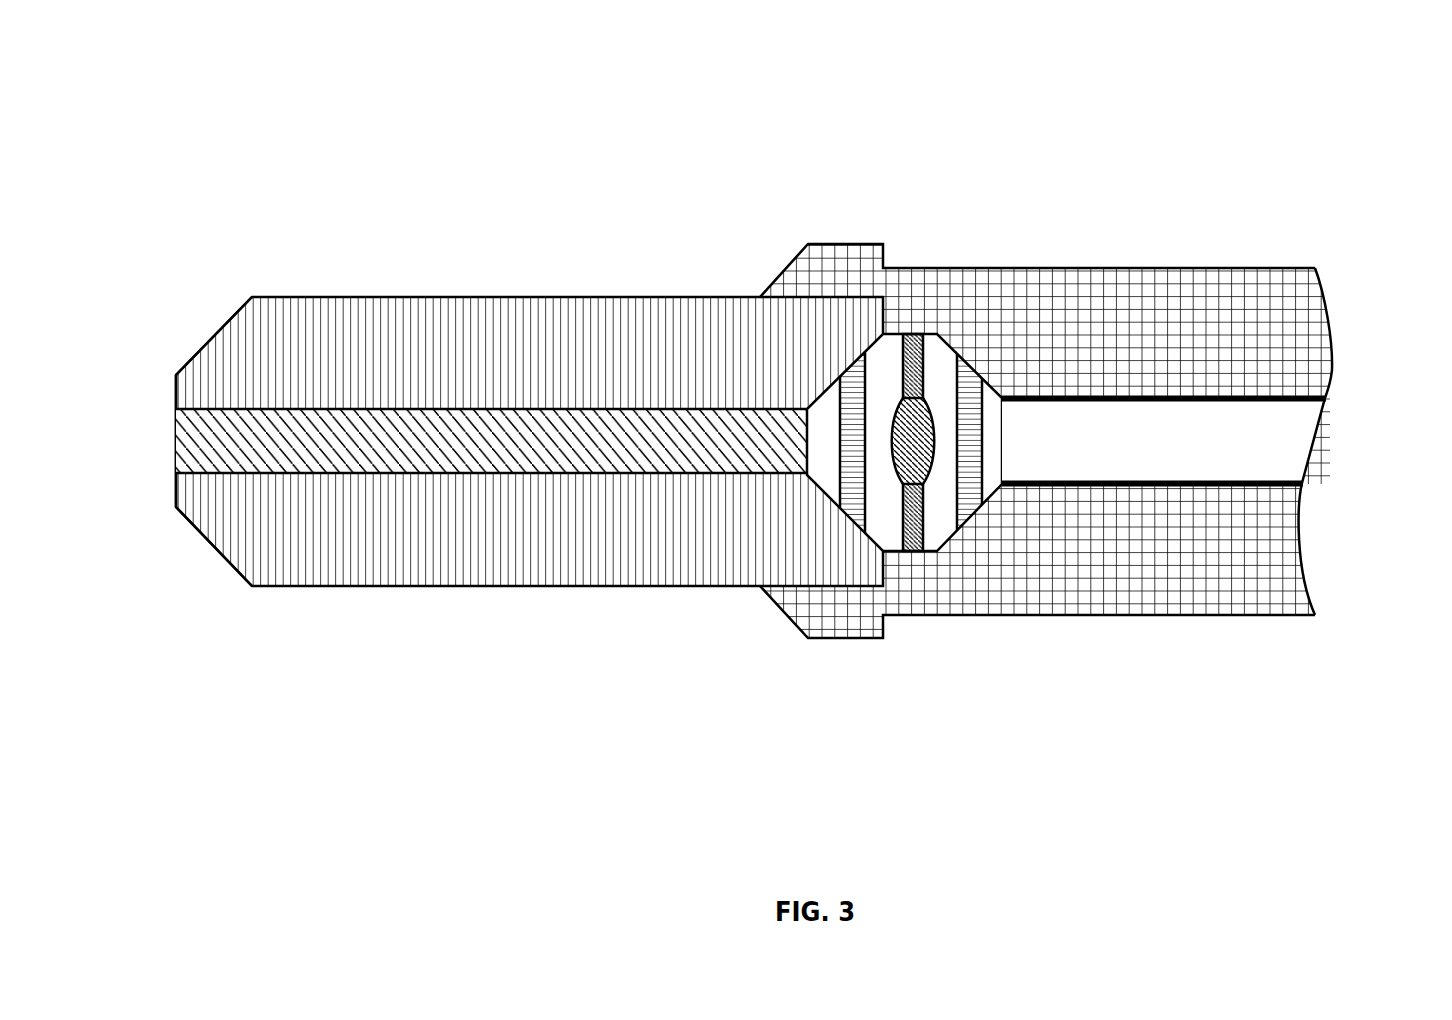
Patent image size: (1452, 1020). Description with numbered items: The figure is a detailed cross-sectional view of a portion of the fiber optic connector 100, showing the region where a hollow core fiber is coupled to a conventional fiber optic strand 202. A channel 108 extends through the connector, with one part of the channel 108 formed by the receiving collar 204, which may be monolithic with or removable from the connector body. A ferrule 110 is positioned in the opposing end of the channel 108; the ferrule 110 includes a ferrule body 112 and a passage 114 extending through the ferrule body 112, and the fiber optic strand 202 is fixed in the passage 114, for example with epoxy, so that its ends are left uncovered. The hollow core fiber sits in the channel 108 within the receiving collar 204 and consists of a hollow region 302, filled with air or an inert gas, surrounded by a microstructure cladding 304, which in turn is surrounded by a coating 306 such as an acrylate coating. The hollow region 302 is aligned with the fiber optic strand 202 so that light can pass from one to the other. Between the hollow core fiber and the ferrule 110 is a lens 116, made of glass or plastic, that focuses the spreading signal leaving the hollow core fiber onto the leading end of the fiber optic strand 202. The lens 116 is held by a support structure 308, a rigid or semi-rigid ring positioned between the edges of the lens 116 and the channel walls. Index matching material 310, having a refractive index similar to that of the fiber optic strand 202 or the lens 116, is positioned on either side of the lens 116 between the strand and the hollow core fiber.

The fiber optic connector 100 is at (260, 73).
The channel 108 is at (1334, 427).
The ferrule 110 is at (548, 297).
The ferrule body 112 is at (237, 348).
The passage 114 is at (163, 417).
The lens 116 is at (918, 448).
The fiber optic strand 202 is at (175, 445).
The receiving collar 204 is at (1105, 268).
The hollow region 302 is at (1292, 447).
The microstructure cladding 304 is at (1303, 484).
The coating 306 is at (1327, 398).
The support structure 308 is at (913, 334).
The index matching material 310 is at (840, 433).